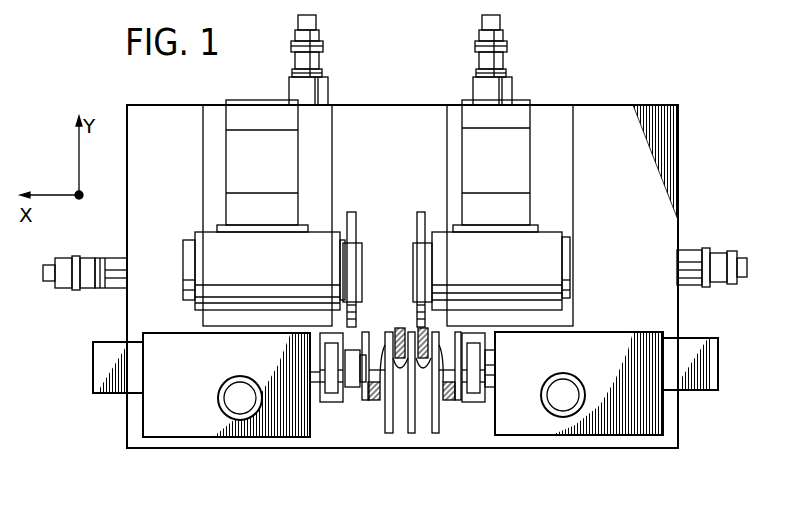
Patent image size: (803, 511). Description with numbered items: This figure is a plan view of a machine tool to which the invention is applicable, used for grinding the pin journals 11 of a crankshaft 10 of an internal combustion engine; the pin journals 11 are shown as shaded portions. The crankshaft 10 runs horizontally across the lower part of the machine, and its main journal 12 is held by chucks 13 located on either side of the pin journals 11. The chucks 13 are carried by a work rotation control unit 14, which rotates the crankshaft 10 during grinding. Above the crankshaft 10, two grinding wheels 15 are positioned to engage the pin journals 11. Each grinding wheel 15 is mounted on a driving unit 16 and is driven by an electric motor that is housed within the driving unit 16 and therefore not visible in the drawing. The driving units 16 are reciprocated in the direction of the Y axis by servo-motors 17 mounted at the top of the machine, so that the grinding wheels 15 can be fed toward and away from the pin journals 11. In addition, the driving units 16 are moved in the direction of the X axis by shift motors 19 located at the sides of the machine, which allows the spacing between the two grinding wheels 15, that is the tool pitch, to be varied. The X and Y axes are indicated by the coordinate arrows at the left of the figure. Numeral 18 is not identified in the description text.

The crankshaft 10 is at (461, 424).
The pin journals 11 is at (421, 328).
The main journal 12 is at (353, 390).
The chucks 13 is at (333, 403).
The work rotation control unit 14 is at (174, 432).
The grinding wheels 15 is at (417, 231).
The driving units 16 is at (200, 245).
The servo-motors 17 is at (320, 87).
The cylinders 18 is at (290, 157).
The shift motors 19 is at (108, 290).